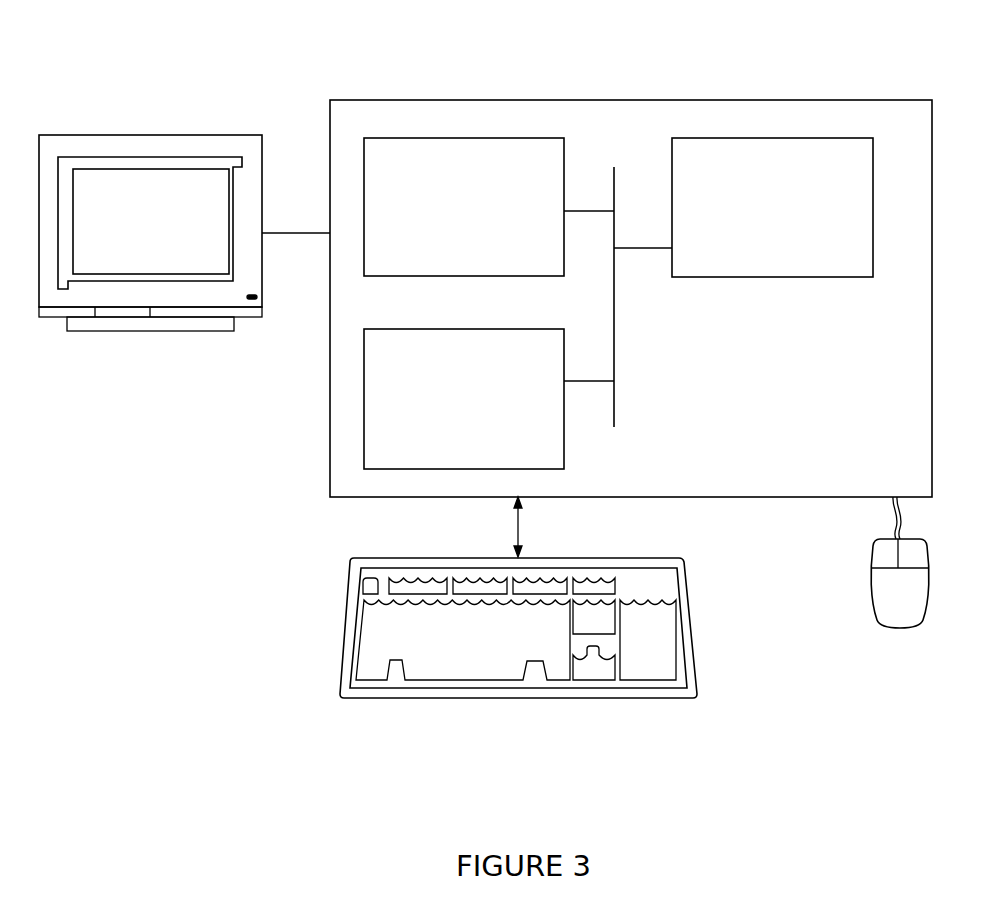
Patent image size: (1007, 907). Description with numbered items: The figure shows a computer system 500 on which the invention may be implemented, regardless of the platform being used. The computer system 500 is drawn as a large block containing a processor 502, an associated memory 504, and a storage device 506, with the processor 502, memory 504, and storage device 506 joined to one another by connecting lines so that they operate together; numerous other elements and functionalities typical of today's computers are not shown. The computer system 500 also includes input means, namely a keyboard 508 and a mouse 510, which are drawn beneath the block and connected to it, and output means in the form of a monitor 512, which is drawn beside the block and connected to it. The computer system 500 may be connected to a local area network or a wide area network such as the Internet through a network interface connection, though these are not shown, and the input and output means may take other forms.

The computer system 500 is at (662, 54).
The processor 502 is at (741, 217).
The memory 504 is at (446, 217).
The storage device 506 is at (446, 412).
The keyboard 508 is at (443, 649).
The mouse 510 is at (879, 602).
The monitor 512 is at (128, 235).